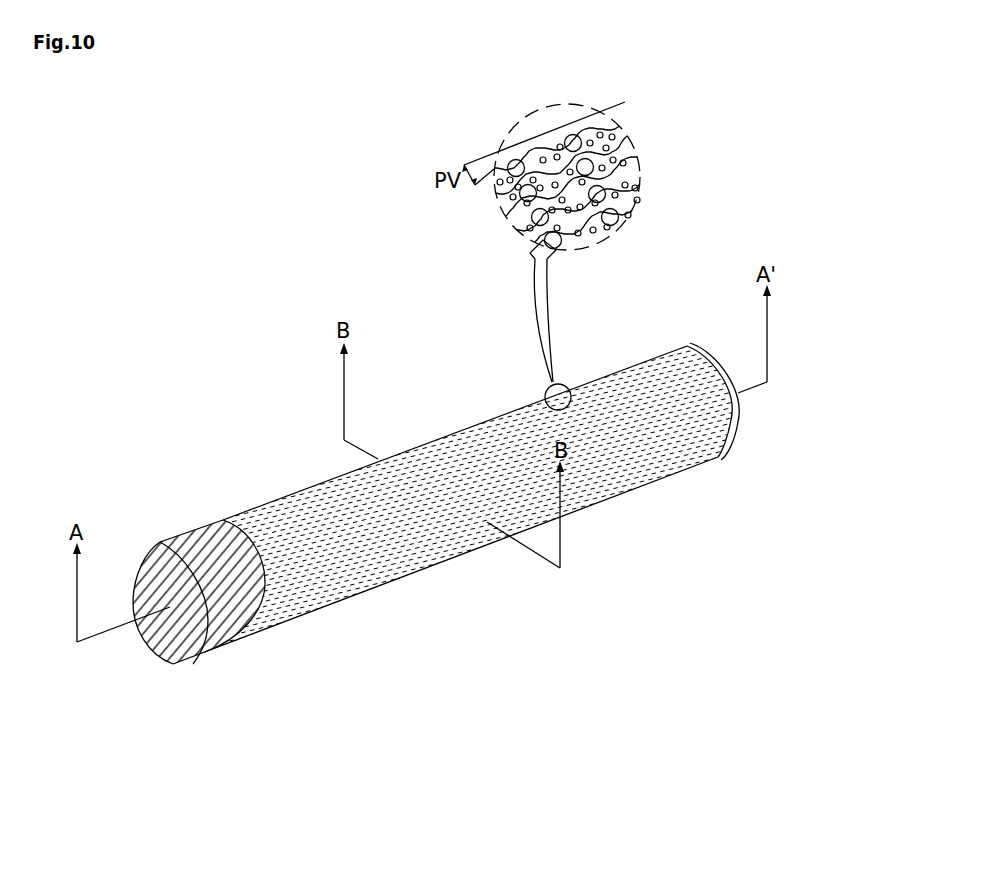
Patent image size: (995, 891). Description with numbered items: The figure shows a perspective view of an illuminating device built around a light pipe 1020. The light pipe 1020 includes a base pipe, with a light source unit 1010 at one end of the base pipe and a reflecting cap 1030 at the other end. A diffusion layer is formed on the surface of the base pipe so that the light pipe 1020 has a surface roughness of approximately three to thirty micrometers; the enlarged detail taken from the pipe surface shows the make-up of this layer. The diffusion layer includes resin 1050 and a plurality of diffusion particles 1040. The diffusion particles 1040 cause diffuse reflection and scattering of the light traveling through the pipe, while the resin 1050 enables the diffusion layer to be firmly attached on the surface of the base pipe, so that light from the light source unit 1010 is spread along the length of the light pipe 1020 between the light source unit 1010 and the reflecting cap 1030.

The light source unit 1010 is at (236, 622).
The light pipe 1020 is at (326, 585).
The reflecting cap 1030 is at (740, 424).
The diffusion particles 1040 is at (580, 139).
The resin 1050 is at (605, 145).